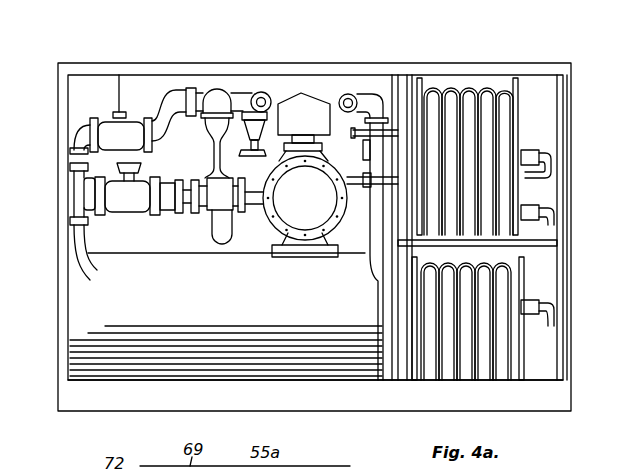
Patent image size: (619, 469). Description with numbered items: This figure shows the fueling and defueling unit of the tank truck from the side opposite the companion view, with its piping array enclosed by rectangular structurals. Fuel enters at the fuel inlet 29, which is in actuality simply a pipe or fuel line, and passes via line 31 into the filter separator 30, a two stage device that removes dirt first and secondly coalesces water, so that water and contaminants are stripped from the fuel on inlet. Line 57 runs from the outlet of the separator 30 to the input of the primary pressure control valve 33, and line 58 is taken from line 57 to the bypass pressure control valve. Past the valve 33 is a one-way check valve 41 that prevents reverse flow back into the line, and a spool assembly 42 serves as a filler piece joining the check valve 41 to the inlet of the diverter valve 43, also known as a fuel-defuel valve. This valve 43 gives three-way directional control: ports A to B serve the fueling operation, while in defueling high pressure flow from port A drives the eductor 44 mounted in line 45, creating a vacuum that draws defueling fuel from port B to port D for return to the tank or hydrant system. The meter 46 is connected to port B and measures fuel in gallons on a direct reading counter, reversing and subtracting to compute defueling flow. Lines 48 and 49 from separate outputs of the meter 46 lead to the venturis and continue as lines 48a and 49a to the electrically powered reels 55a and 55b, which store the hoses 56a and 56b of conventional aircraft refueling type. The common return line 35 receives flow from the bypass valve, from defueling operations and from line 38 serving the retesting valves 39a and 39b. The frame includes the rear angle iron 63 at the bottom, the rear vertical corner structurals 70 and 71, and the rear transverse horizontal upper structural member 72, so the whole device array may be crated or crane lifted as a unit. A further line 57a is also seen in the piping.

The fuel inlet 29 is at (353, 83).
The filter separator 30 is at (82, 325).
The line 31 is at (375, 283).
The primary pressure control valve 33 is at (125, 208).
The common return line 35 is at (271, 84).
The line 38 is at (166, 93).
The retesting valve 39a is at (214, 142).
The retesting valve 39b is at (252, 157).
The one-way check valve 41 is at (167, 226).
The spool assembly 42 is at (180, 212).
The diverter valve 43 is at (206, 176).
The eductor 44 is at (242, 93).
The line 45 is at (218, 242).
The meter 46 is at (305, 204).
The line 48 is at (360, 180).
The line 48a is at (552, 180).
The line 49 is at (348, 230).
The line 49a is at (555, 216).
The reel 55a is at (526, 130).
The reel 55b is at (528, 306).
The hose 56a is at (477, 88).
The hose 56b is at (485, 370).
The line 57 is at (70, 270).
The pipe 57a is at (78, 190).
The line 58 is at (75, 140).
The rear angle iron 63 is at (100, 404).
The rear vertical corner structural 70 is at (60, 216).
The rear vertical corner structural 71 is at (581, 327).
The rear transverse horizontal upper structural member 72 is at (325, 66).
The port A is at (216, 164).
The port B is at (253, 210).
The port D is at (242, 213).